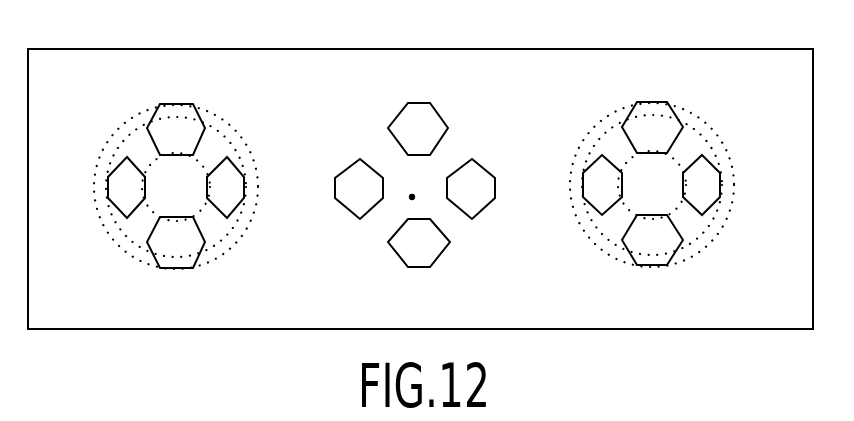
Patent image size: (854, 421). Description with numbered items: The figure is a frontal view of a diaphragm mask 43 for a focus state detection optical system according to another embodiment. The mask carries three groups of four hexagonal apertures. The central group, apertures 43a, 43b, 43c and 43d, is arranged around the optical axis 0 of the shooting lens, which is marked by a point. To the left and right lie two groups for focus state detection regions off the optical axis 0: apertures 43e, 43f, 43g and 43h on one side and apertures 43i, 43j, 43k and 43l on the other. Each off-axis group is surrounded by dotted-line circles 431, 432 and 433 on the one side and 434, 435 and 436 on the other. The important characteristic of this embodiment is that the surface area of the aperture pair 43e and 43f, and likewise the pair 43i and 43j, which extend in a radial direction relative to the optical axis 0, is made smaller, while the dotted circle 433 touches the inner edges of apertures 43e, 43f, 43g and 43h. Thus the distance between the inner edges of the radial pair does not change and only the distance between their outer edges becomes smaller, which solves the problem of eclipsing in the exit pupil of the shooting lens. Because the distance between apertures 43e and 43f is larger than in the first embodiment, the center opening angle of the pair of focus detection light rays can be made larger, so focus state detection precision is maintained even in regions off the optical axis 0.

The diaphragm mask 43 is at (633, 331).
The optical axis 0 is at (421, 186).
The aperture 43a is at (333, 195).
The aperture 43b is at (485, 168).
The aperture 43c is at (437, 113).
The aperture 43d is at (398, 252).
The aperture 43e is at (103, 193).
The aperture 43f is at (238, 168).
The aperture 43g is at (210, 95).
The aperture 43h is at (150, 250).
The aperture 43i is at (583, 192).
The aperture 43j is at (717, 167).
The aperture 43k is at (670, 112).
The aperture 43l is at (627, 247).
The circle 431 is at (120, 242).
The circle 432 is at (232, 232).
The circle 433 is at (155, 165).
The circle 434 is at (595, 238).
The circle 435 is at (705, 232).
The circle 436 is at (630, 162).